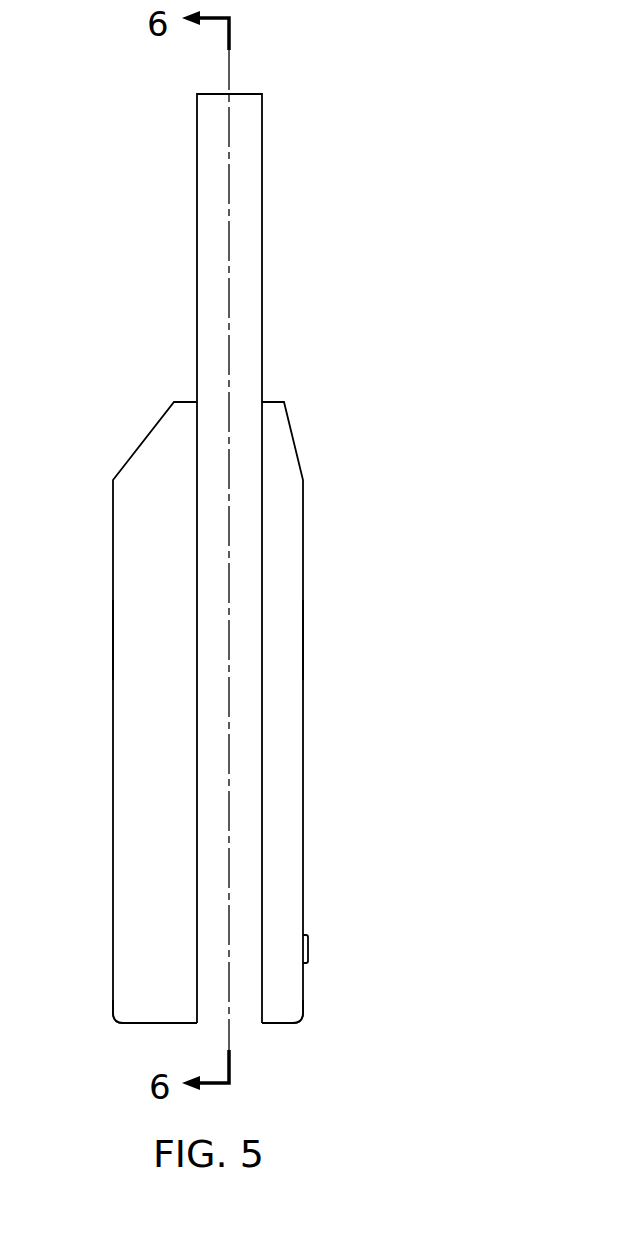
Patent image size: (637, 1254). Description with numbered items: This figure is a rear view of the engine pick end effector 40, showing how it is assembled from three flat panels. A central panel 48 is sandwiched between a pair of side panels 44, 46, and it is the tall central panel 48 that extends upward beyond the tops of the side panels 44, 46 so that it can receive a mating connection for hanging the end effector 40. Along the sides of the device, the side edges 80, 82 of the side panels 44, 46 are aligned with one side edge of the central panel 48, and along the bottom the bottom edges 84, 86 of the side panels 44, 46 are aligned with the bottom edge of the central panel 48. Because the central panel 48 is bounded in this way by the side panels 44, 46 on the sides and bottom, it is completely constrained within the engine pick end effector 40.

The engine pick end effector 40 is at (268, 578).
The side panel 44 is at (290, 735).
The side panel 46 is at (125, 735).
The central panel 48 is at (250, 256).
The side edge 80 is at (290, 652).
The side edge 82 is at (125, 652).
The bottom edge 84 is at (280, 1025).
The bottom edge 86 is at (127, 1025).